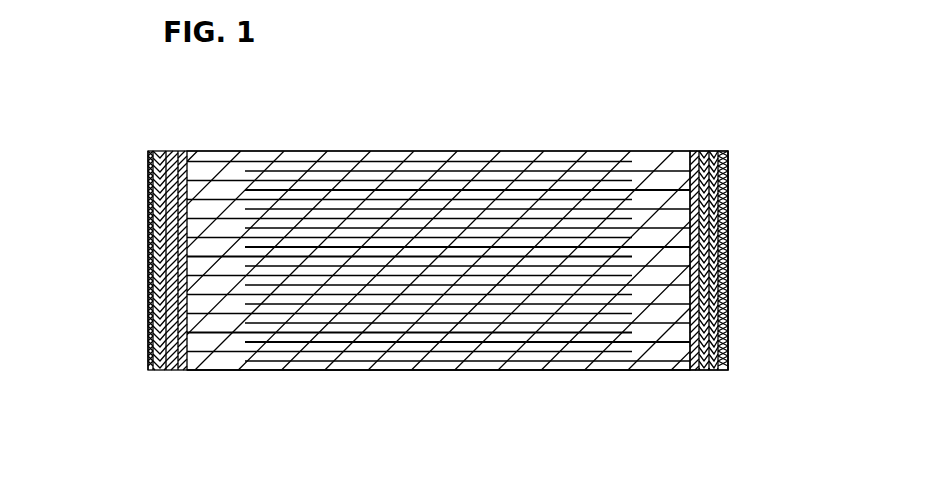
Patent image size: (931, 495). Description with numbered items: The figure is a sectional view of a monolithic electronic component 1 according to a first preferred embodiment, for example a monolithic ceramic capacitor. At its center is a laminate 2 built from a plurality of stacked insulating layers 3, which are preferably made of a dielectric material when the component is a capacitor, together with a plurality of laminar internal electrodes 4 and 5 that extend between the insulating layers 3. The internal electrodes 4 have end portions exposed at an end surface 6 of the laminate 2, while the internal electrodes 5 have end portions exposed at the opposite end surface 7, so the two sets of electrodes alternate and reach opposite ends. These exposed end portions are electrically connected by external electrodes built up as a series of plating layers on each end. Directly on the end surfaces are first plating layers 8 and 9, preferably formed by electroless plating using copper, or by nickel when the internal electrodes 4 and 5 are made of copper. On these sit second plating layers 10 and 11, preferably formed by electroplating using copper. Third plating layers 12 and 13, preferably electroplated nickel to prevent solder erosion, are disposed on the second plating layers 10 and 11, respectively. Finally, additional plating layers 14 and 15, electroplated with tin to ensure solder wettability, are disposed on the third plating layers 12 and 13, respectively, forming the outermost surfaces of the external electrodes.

The monolithic electronic component 1 is at (421, 145).
The laminate 2 is at (553, 151).
The insulating layers 3 is at (730, 173).
The internal electrodes 4 is at (225, 353).
The internal electrodes 5 is at (649, 370).
The end surface 6 is at (184, 195).
The end surface 7 is at (683, 203).
The first plating layer 8 is at (168, 357).
The first plating layer 9 is at (697, 350).
The second plating layer 10 is at (155, 313).
The second plating layer 11 is at (712, 312).
The third plating layer 12 is at (157, 268).
The third plating layer 13 is at (712, 273).
The additional plating layer 14 is at (148, 230).
The additional plating layer 15 is at (730, 231).